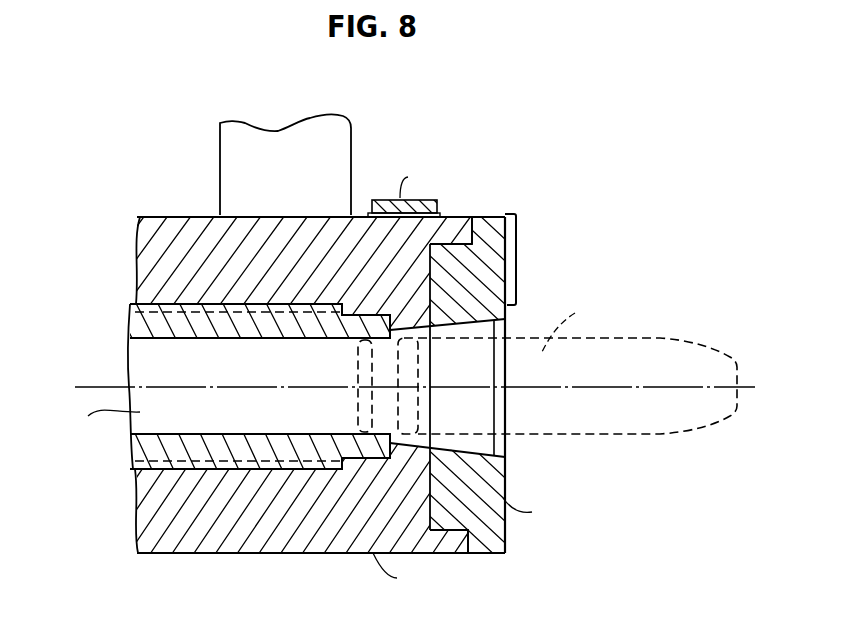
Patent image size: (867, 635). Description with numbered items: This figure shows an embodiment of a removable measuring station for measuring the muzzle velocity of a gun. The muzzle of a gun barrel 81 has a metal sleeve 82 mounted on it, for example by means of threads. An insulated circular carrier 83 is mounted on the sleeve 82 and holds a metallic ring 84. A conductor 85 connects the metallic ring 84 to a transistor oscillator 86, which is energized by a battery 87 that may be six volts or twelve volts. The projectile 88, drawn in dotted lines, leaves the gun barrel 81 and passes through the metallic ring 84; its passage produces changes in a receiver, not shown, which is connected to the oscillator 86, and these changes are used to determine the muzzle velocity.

The gun barrel 81 is at (153, 455).
The metal sleeve 82 is at (217, 522).
The insulated circular carrier 83 is at (498, 537).
The metallic ring 84 is at (508, 413).
The conductor 85 is at (500, 212).
The transistor oscillator 86 is at (385, 198).
The battery 87 is at (228, 131).
The projectile 88 is at (645, 435).